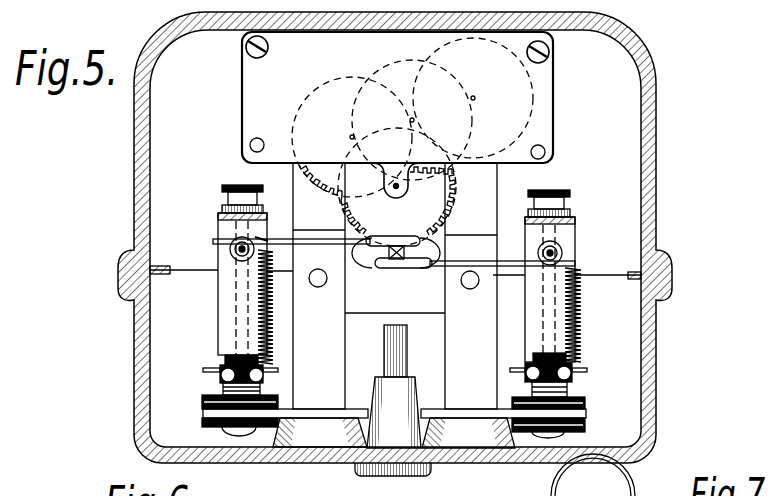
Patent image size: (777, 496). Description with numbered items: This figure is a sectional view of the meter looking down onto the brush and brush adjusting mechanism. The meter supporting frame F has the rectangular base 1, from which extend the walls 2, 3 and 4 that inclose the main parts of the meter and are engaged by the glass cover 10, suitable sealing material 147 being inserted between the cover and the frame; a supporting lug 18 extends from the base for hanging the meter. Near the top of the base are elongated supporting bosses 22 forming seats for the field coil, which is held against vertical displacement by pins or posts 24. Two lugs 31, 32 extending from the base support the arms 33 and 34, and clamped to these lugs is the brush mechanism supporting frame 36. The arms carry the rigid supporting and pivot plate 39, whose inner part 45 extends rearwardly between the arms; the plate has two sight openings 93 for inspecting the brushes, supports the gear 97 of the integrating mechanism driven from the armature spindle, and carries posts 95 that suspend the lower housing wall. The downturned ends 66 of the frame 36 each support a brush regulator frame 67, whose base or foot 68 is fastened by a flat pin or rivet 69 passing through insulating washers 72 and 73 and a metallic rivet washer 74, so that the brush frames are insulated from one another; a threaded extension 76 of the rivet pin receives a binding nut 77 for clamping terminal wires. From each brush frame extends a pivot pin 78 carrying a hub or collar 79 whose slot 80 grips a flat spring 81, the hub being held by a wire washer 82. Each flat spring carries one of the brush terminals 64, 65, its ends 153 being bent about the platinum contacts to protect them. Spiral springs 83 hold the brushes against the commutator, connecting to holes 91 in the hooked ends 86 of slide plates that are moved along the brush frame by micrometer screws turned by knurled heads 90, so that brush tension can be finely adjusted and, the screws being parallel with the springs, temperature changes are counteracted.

The base 1 is at (507, 457).
The wall 2 is at (655, 358).
The wall 3 is at (143, 365).
The wall 4 is at (163, 325).
The cover 10 is at (664, 262).
The supporting lug 18 is at (405, 470).
The supporting bosses 22 is at (413, 382).
The pins or posts 24 is at (392, 356).
The lug 31 is at (305, 437).
The lug 32 is at (455, 427).
The arm 33 is at (319, 286).
The arm 34 is at (471, 286).
The brush mechanism supporting frame 36 is at (308, 412).
The supporting and pivot plate 39 is at (409, 139).
The inner part of plate edge 45 is at (405, 305).
The brush terminal 64 is at (440, 250).
The brush terminal 65 is at (356, 246).
The ends of brush mechanism supporting frame 66 is at (203, 412).
The brush regulator frame 67 is at (568, 237).
The base or foot 68 is at (203, 395).
The pin or rivet 69 is at (232, 430).
The insulating washer 72 is at (203, 403).
The insulating washer 73 is at (200, 420).
The rivet washer 74 is at (253, 428).
The threaded extension 76 is at (238, 358).
The binding nut 77 is at (242, 284).
The pivot pin 78 is at (230, 252).
The hub or collar 79 is at (238, 248).
The slot 80 is at (257, 238).
The flat spring 81 is at (302, 239).
The wire washer 82 is at (213, 243).
The spiral spring 83 is at (268, 306).
The hooked ends 86 is at (210, 368).
The knurled head 90 is at (236, 186).
The hole 91 is at (277, 364).
The sight openings 93 is at (343, 253).
The posts 95 is at (258, 140).
The gear 97 is at (444, 200).
The sealing material 147 is at (603, 276).
The ends of brush springs 153 is at (410, 237).
The meter supporting frame F is at (630, 408).